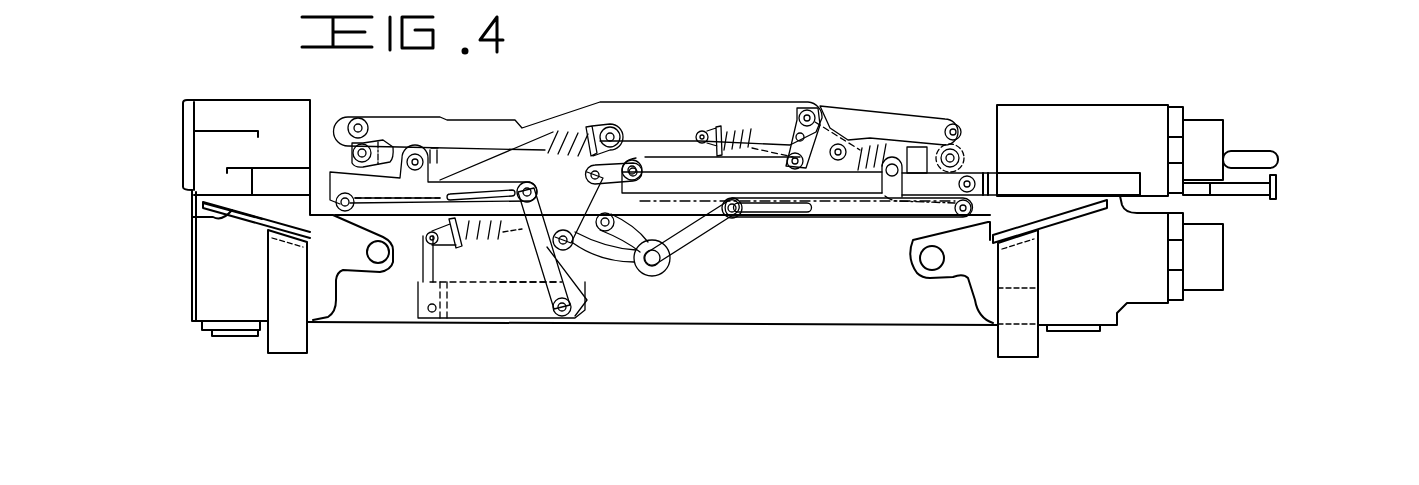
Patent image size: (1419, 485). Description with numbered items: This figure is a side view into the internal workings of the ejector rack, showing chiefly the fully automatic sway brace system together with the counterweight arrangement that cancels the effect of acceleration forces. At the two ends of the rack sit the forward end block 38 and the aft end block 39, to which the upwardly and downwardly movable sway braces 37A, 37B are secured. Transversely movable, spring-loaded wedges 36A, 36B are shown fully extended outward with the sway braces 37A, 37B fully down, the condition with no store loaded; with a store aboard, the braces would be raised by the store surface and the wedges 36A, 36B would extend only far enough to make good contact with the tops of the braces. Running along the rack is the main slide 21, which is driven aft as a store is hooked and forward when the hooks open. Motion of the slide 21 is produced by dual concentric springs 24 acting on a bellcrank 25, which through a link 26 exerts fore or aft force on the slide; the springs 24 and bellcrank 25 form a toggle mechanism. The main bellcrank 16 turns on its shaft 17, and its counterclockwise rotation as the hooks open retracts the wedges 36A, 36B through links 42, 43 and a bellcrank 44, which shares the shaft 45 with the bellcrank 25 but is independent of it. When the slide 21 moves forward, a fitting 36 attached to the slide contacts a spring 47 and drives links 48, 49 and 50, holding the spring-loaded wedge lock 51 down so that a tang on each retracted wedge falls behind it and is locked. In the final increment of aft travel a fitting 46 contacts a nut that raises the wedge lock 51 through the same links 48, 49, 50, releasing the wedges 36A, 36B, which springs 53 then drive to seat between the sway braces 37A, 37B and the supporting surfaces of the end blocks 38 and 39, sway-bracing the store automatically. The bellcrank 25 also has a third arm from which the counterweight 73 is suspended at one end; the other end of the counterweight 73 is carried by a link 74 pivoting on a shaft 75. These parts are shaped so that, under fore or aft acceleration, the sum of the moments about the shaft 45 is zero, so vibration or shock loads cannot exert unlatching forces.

The main bellcrank 16 is at (700, 248).
The shaft 17 is at (660, 258).
The main slide 21 is at (664, 165).
The dual concentric springs 24 is at (501, 233).
The bellcrank 25 is at (540, 247).
The link 26 is at (620, 160).
The fitting 36 is at (202, 210).
The wedge 36A is at (258, 206).
The wedge 36B is at (1043, 218).
The sway brace 37A is at (295, 355).
The sway brace 37B is at (1027, 357).
The forward end block 38 is at (183, 126).
The aft end block 39 is at (1107, 103).
The link 42 is at (818, 218).
The link 43 is at (391, 210).
The bellcrank 44 is at (580, 245).
The shaft 45 is at (580, 267).
The fitting 46 is at (903, 143).
The spring 47 is at (867, 147).
The link 48 is at (823, 108).
The link 49 is at (780, 108).
The link 50 is at (423, 115).
The wedge lock 51 is at (927, 140).
The spring 53 is at (730, 108).
The counterweight 73 is at (460, 313).
The link 74 is at (416, 278).
The shaft 75 is at (440, 240).